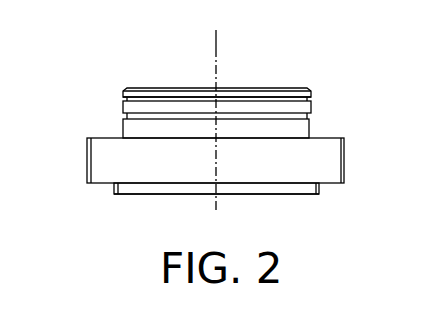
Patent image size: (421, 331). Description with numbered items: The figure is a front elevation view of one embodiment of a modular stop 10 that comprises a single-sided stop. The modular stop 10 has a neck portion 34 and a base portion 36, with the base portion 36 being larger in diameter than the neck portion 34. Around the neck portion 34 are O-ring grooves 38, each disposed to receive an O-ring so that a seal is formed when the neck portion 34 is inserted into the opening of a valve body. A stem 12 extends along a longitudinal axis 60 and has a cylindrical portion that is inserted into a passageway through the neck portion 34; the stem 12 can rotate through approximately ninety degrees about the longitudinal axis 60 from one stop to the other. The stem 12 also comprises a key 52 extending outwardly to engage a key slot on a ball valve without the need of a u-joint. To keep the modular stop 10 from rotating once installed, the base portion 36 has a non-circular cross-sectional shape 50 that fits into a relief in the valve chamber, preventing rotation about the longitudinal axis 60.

The modular stop 10 is at (173, 53).
The stem 12 is at (290, 194).
The neck portion 34 is at (304, 88).
The base portion 36 is at (344, 155).
The O-ring groove 38 is at (125, 118).
The cross-sectional shape 50 is at (87, 160).
The key 52 is at (160, 194).
The longitudinal axis 60 is at (218, 36).